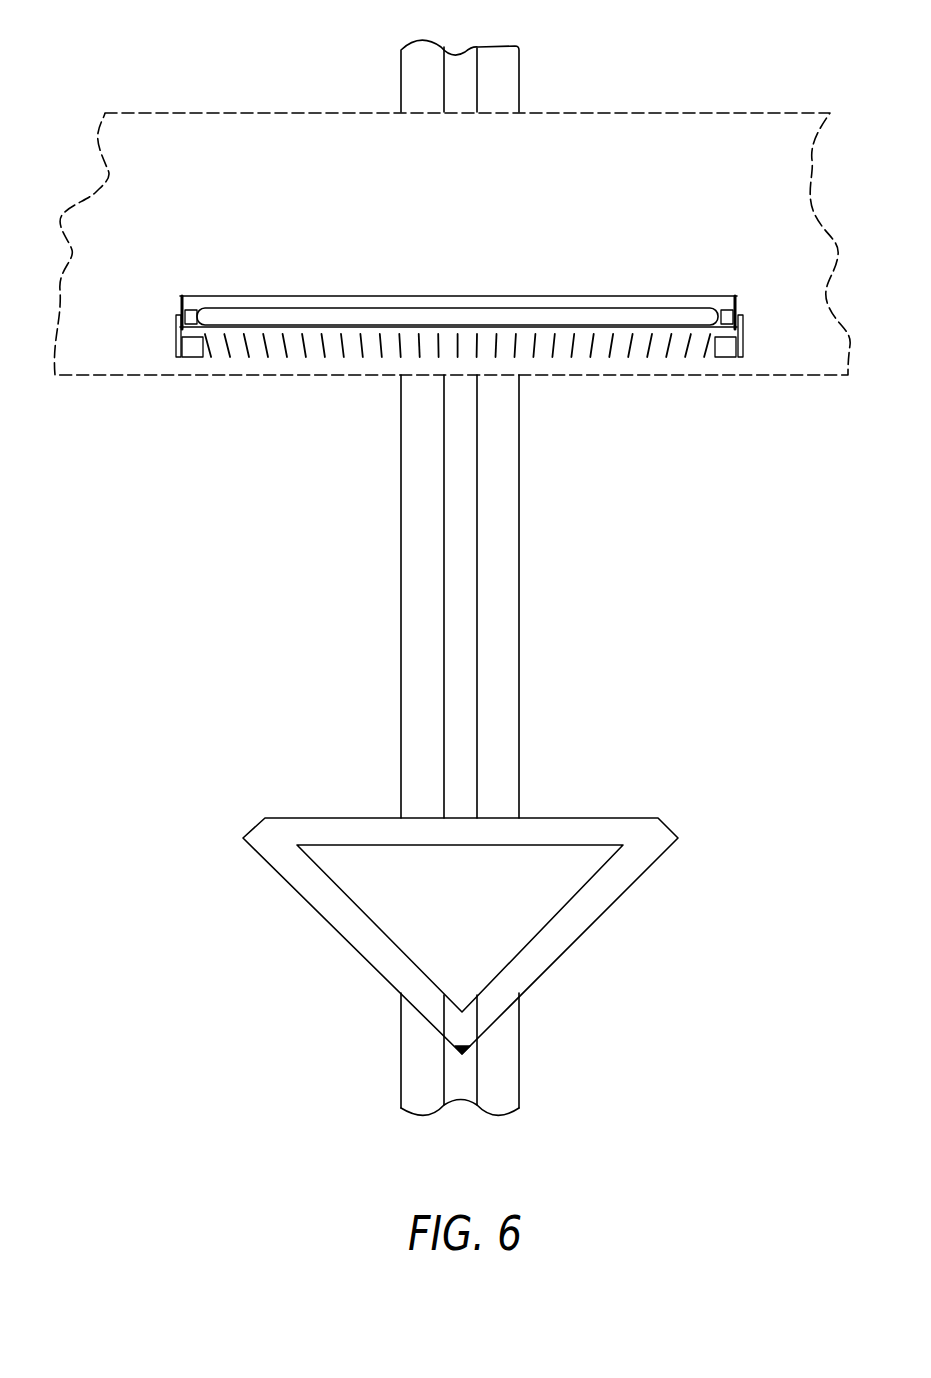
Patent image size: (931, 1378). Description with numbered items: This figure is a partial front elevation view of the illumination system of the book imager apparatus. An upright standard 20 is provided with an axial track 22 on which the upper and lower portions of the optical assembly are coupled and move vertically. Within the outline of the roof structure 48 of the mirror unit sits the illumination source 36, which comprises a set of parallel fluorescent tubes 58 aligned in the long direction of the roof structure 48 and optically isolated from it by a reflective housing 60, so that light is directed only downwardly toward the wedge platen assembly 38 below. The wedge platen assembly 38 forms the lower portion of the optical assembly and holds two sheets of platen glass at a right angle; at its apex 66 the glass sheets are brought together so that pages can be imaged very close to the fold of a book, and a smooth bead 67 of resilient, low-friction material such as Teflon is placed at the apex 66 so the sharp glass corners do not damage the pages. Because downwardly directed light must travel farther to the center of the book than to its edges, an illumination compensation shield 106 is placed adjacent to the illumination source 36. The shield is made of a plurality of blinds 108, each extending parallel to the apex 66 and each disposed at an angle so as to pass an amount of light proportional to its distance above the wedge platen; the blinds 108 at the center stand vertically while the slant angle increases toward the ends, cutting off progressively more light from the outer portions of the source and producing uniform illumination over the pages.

The upright standard 20 is at (498, 80).
The axial track 22 is at (457, 73).
The illumination source 36 is at (463, 332).
The wedge platen assembly 38 is at (554, 808).
The roof structure 48 is at (660, 112).
The fluorescent tubes 58 is at (376, 315).
The reflective housing 60 is at (270, 295).
The apex 66 is at (447, 1053).
The bead 67 is at (468, 1057).
The illumination compensation shield 106 is at (283, 363).
The blinds 108 is at (515, 347).